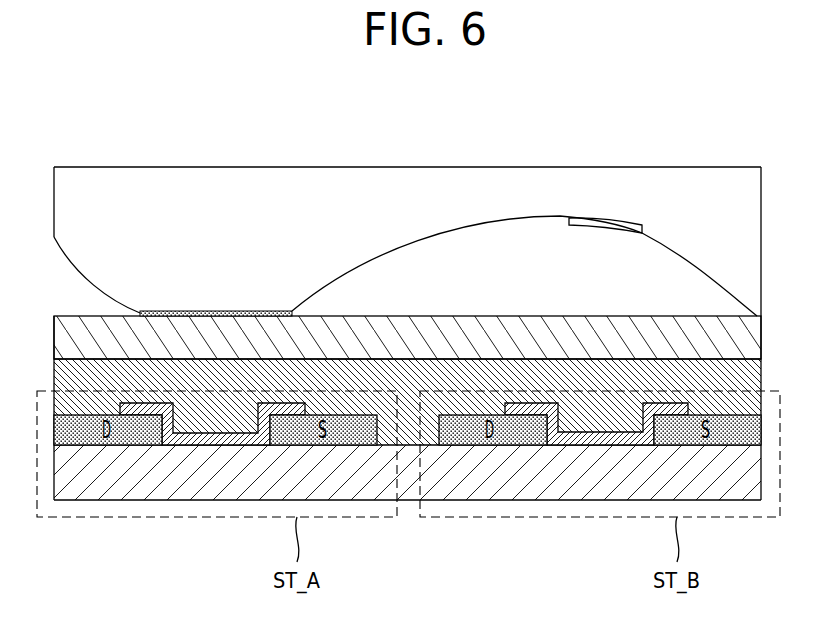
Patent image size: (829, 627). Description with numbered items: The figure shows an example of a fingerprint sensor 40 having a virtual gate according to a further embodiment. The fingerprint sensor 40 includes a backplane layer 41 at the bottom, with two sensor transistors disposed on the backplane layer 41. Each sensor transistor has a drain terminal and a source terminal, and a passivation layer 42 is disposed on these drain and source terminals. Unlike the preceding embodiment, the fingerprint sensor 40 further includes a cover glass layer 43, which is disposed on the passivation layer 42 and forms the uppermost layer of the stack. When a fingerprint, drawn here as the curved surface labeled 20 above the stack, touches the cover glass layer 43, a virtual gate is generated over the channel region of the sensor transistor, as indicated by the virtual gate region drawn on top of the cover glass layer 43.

The encapsulation layer 20 is at (85, 208).
The fingerprint sensor 40 is at (726, 128).
The backplane layer 41 is at (85, 479).
The passivation layer 42 is at (85, 386).
The cover glass layer 43 is at (85, 352).